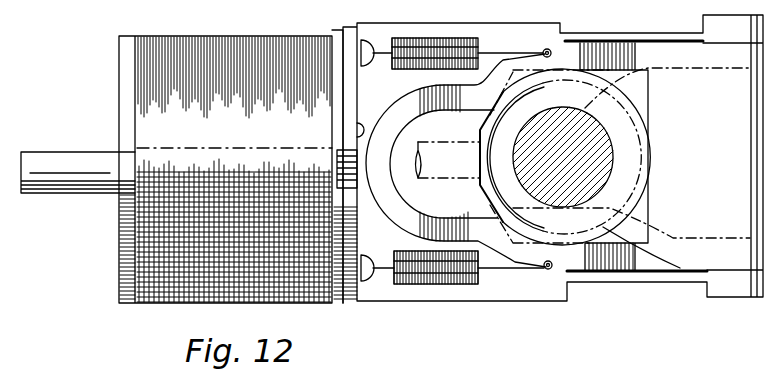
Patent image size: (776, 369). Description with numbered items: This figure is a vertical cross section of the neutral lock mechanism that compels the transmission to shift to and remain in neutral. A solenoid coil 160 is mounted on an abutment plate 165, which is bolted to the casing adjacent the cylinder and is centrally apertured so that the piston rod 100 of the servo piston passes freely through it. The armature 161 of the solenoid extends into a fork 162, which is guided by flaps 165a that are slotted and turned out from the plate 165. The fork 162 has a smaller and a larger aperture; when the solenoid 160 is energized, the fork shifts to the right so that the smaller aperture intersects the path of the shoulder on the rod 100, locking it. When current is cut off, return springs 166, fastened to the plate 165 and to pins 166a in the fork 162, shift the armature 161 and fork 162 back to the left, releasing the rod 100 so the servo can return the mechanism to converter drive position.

The piston rod 100 is at (607, 153).
The solenoid coil 160 is at (147, 95).
The armature 161 is at (84, 164).
The fork 162 is at (397, 207).
The abutment plate 165 is at (513, 285).
The flaps 165a is at (618, 36).
The return springs 166 is at (457, 67).
The pins 166a is at (553, 265).